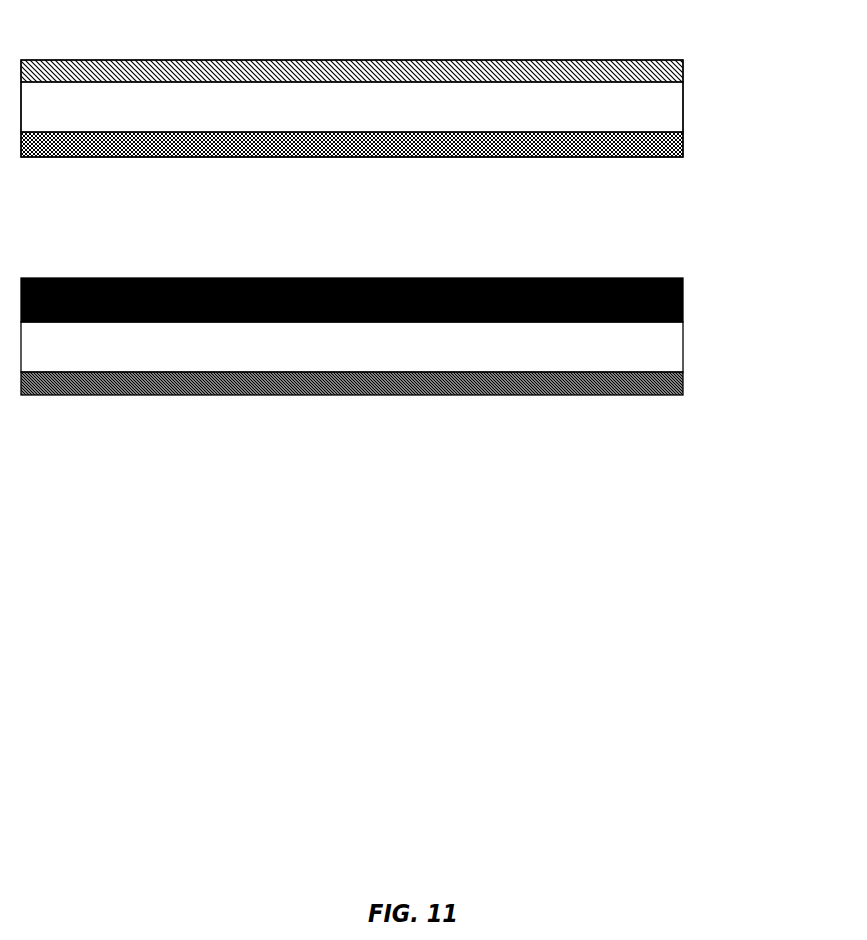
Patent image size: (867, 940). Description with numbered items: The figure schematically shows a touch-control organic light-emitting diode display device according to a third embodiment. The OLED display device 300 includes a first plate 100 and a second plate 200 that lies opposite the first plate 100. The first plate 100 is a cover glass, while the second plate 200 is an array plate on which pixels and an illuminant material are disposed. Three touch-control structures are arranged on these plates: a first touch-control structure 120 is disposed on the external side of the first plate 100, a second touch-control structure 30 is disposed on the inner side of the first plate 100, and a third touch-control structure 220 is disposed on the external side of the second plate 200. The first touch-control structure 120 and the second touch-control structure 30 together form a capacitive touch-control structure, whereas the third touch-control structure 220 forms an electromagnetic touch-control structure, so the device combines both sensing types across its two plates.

The OLED display device 300 is at (70, 42).
The first touch-control structure 120 is at (683, 68).
The first plate 100 is at (671, 103).
The second touch-control structure 30 is at (683, 141).
The second plate 200 is at (672, 342).
The third touch-control structure 220 is at (683, 380).